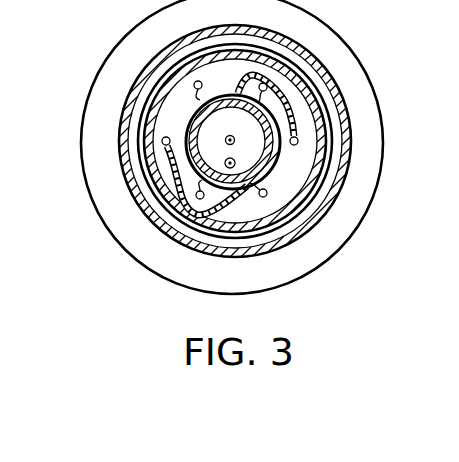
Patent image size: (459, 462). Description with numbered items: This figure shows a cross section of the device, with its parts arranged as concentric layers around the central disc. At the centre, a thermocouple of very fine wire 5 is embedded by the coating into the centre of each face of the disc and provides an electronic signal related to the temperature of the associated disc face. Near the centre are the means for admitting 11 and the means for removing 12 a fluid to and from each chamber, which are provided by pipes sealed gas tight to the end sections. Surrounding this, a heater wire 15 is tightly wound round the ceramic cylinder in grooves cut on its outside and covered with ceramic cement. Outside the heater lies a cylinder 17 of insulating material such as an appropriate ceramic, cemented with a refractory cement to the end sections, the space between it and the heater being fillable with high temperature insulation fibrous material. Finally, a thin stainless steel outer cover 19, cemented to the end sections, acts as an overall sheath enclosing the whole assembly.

The outer cover 19 is at (87, 172).
The cylinder of insulating material 17 is at (317, 100).
The heater wire 15 is at (172, 180).
The thermocouple of very fine wire 5 is at (244, 172).
The means for admitting a fluid 11 is at (234, 136).
The means for removing a fluid 12 is at (225, 163).